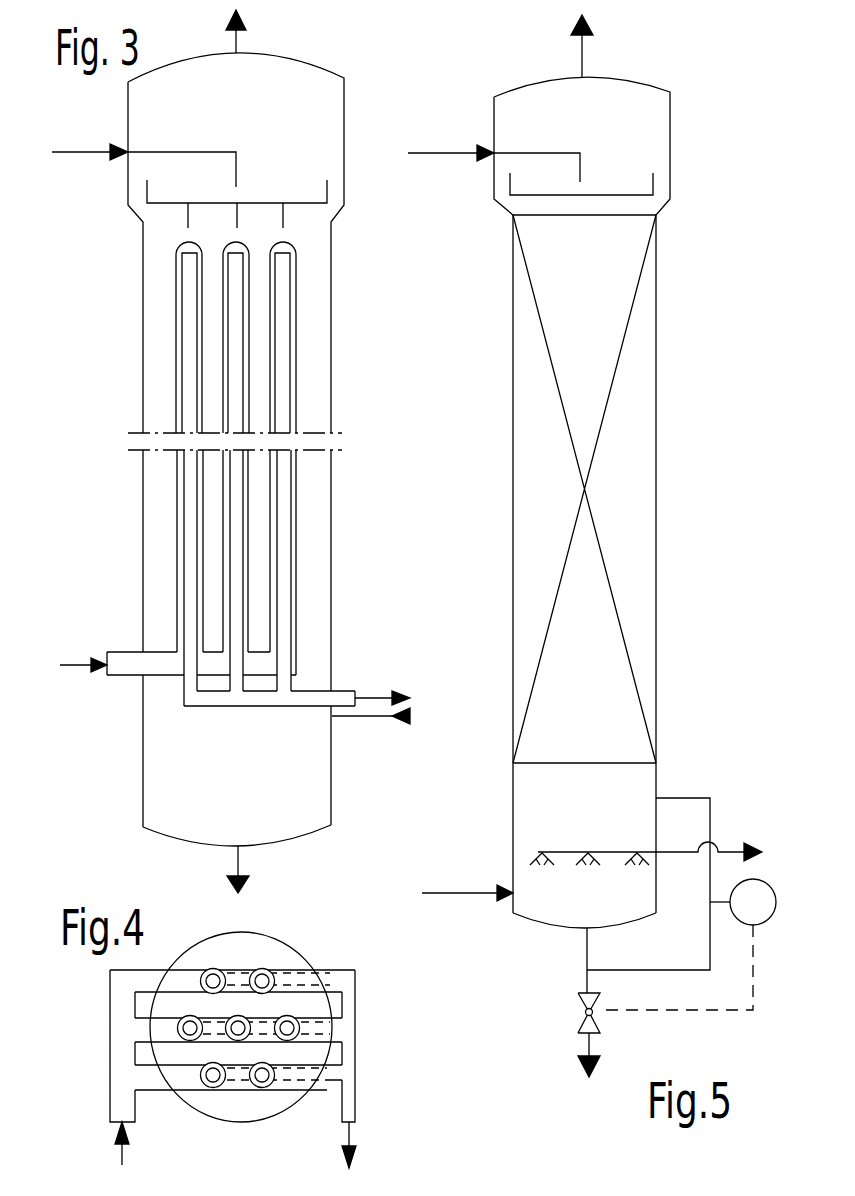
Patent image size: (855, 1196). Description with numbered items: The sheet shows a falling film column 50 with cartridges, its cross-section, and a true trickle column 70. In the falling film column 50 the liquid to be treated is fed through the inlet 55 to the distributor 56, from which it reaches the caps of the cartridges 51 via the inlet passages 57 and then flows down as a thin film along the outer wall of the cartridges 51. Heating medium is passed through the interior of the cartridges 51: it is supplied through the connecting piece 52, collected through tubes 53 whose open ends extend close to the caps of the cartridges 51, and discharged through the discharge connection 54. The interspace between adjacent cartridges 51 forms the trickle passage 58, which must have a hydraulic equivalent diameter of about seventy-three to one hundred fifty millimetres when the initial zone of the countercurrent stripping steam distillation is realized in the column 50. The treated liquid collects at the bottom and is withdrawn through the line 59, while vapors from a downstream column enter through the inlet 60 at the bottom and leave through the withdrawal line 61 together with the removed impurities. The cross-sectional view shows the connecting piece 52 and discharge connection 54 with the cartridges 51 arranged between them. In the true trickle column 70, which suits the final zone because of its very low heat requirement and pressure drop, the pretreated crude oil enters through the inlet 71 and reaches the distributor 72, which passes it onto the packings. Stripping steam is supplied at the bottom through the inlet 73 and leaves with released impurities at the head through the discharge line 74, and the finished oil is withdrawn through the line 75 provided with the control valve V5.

In FIG. 3, the falling film column 50 is at (341, 362).
In FIG. 3, the cartridges 51 is at (296, 317).
In FIG. 3, the connecting piece 52 is at (122, 651).
In FIG. 4, the connecting piece 52 is at (112, 1063).
In FIG. 3, the tubes 53 is at (193, 547).
In FIG. 3, the discharge connection 54 is at (350, 691).
In FIG. 4, the discharge connection 54 is at (350, 1065).
In FIG. 3, the inlet 55 is at (65, 158).
In FIG. 3, the distributor 56 is at (327, 187).
In FIG. 3, the inlet passages 57 is at (283, 218).
In FIG. 3, the trickle passage 58 is at (258, 522).
In FIG. 3, the line 59 is at (240, 865).
In FIG. 3, the inlet 60 is at (413, 712).
In FIG. 3, the withdrawal line 61 is at (237, 35).
In FIG. 5, the true trickle column 70 is at (672, 432).
In FIG. 5, the inlet 71 is at (440, 157).
In FIG. 5, the distributor 72 is at (653, 180).
In FIG. 5, the inlet 73 is at (752, 843).
In FIG. 5, the discharge line 74 is at (583, 43).
In FIG. 5, the line 75 is at (587, 961).
In FIG. 5, the control valve V5 is at (595, 1025).